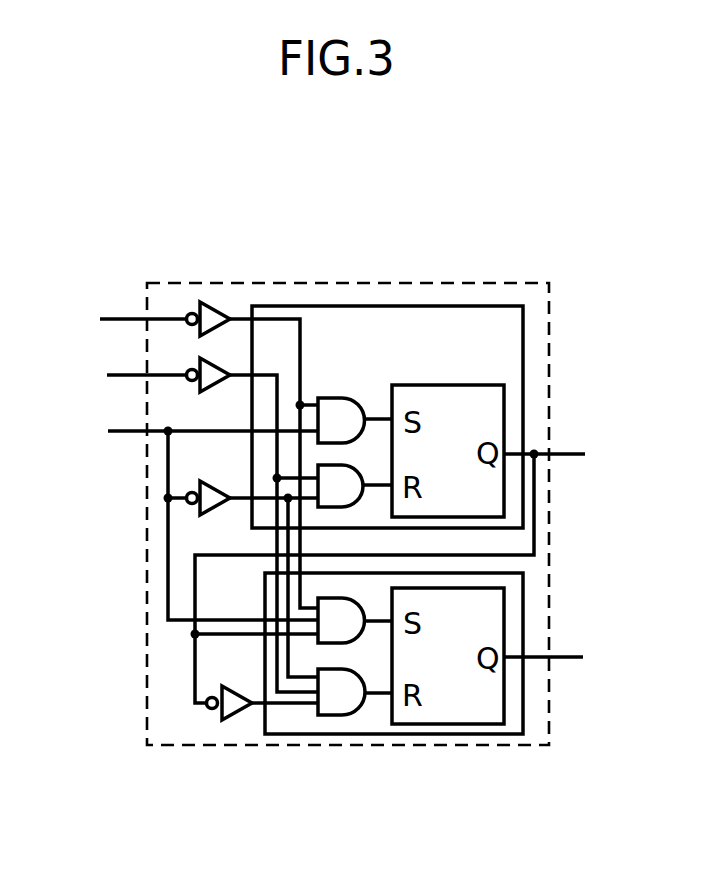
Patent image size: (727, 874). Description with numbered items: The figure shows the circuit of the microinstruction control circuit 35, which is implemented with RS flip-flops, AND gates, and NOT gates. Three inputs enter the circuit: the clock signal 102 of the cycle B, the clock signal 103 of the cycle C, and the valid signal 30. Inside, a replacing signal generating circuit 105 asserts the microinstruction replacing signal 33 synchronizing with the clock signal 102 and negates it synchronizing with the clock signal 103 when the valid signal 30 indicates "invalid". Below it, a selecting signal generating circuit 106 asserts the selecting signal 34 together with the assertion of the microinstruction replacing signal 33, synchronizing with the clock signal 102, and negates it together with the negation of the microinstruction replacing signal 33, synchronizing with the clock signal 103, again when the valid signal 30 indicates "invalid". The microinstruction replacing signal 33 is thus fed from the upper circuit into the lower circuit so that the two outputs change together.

The clock signal of the cycle B 102 is at (117, 317).
The clock signal of the cycle C 103 is at (107, 375).
The valid signal 30 is at (122, 432).
The replacing signal generating circuit 105 is at (440, 303).
The selecting signal generating circuit 106 is at (525, 598).
The microinstruction control circuit 35 is at (552, 343).
The microinstruction replacing signal 33 is at (563, 452).
The selecting signal 34 is at (545, 650).